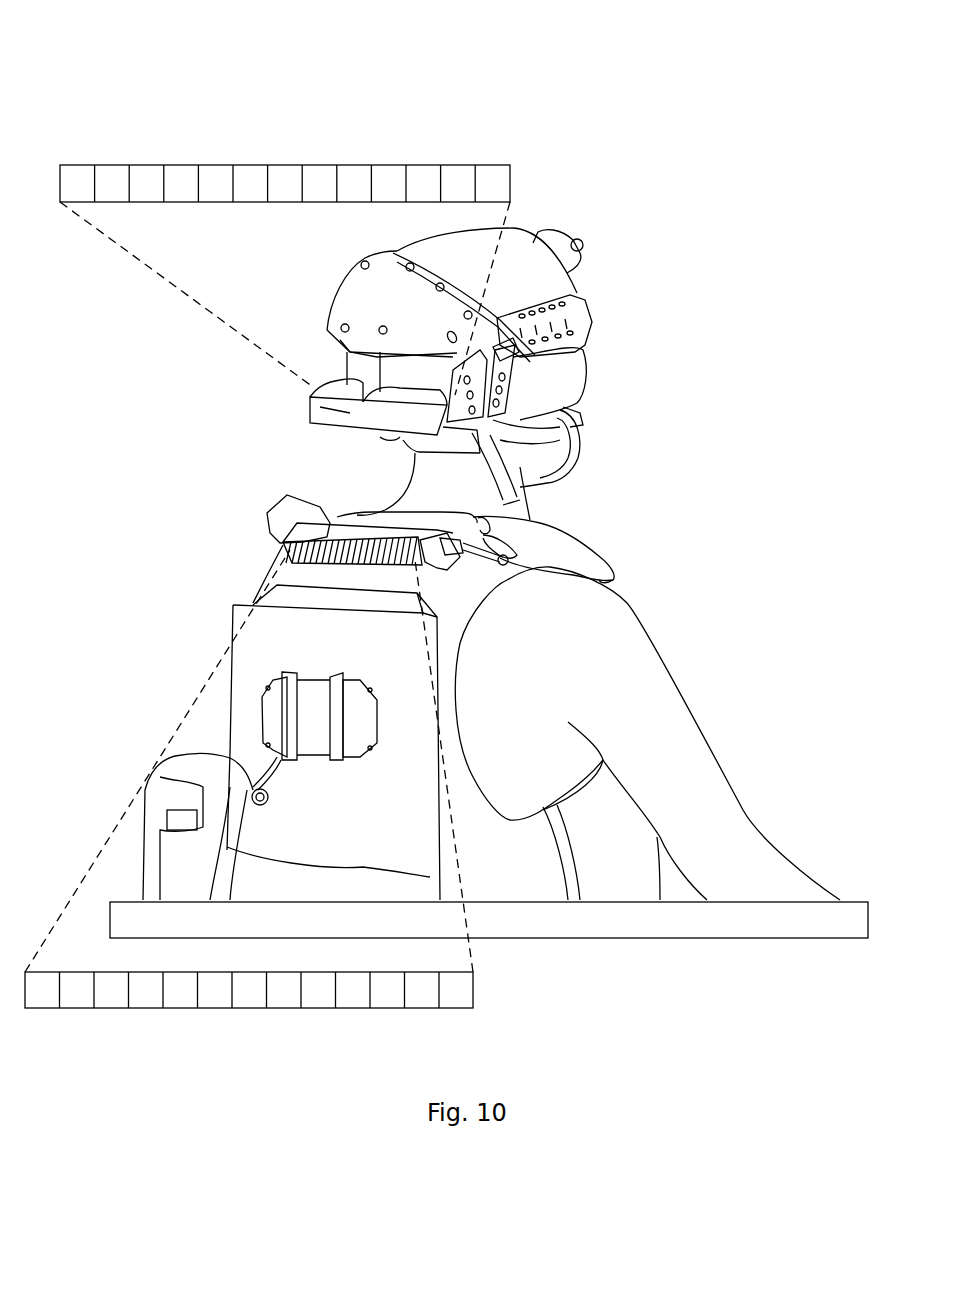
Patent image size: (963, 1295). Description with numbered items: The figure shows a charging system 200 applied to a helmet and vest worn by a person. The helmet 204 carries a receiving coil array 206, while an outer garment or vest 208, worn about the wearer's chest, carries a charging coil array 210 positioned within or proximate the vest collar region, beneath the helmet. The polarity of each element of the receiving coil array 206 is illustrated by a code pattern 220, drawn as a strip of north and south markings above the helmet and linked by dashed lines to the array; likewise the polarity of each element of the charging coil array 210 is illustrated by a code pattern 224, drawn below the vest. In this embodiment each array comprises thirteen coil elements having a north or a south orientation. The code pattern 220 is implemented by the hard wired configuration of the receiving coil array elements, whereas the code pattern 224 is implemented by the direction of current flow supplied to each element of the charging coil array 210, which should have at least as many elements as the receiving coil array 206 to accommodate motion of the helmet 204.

The charging system 200 is at (200, 70).
The helmet 204 is at (370, 247).
The receiving coil array 206 is at (317, 400).
The outer garment or vest 208 is at (397, 843).
The charging coil array 210 is at (337, 527).
The code pattern 220 is at (510, 175).
The code pattern 224 is at (473, 990).